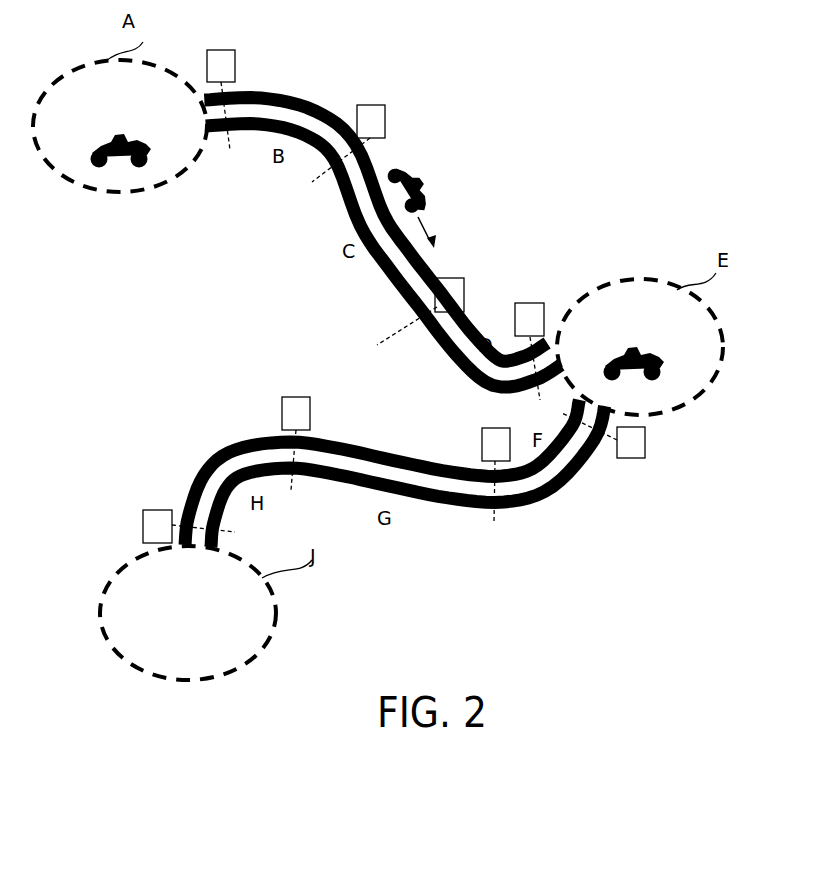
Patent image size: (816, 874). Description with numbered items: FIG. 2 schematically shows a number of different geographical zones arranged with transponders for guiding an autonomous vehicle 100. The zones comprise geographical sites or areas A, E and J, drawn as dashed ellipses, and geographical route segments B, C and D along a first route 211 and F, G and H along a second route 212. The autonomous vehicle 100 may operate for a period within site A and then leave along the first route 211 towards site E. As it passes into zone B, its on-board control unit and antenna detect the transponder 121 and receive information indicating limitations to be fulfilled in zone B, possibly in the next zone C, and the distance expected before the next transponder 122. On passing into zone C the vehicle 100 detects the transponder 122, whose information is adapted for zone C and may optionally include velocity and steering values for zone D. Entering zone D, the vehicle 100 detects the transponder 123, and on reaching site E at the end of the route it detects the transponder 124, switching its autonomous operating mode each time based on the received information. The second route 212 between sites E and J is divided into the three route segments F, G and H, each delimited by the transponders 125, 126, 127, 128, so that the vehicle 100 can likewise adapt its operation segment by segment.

The autonomous vehicle 100 is at (118, 136).
The transponder 121 is at (236, 64).
The transponder 122 is at (386, 120).
The transponder 123 is at (457, 278).
The transponder 124 is at (533, 303).
The transponder 125 is at (646, 442).
The transponder 126 is at (482, 438).
The transponder 127 is at (282, 412).
The transponder 128 is at (157, 510).
The first road section 211 is at (342, 206).
The second road section 212 is at (543, 503).